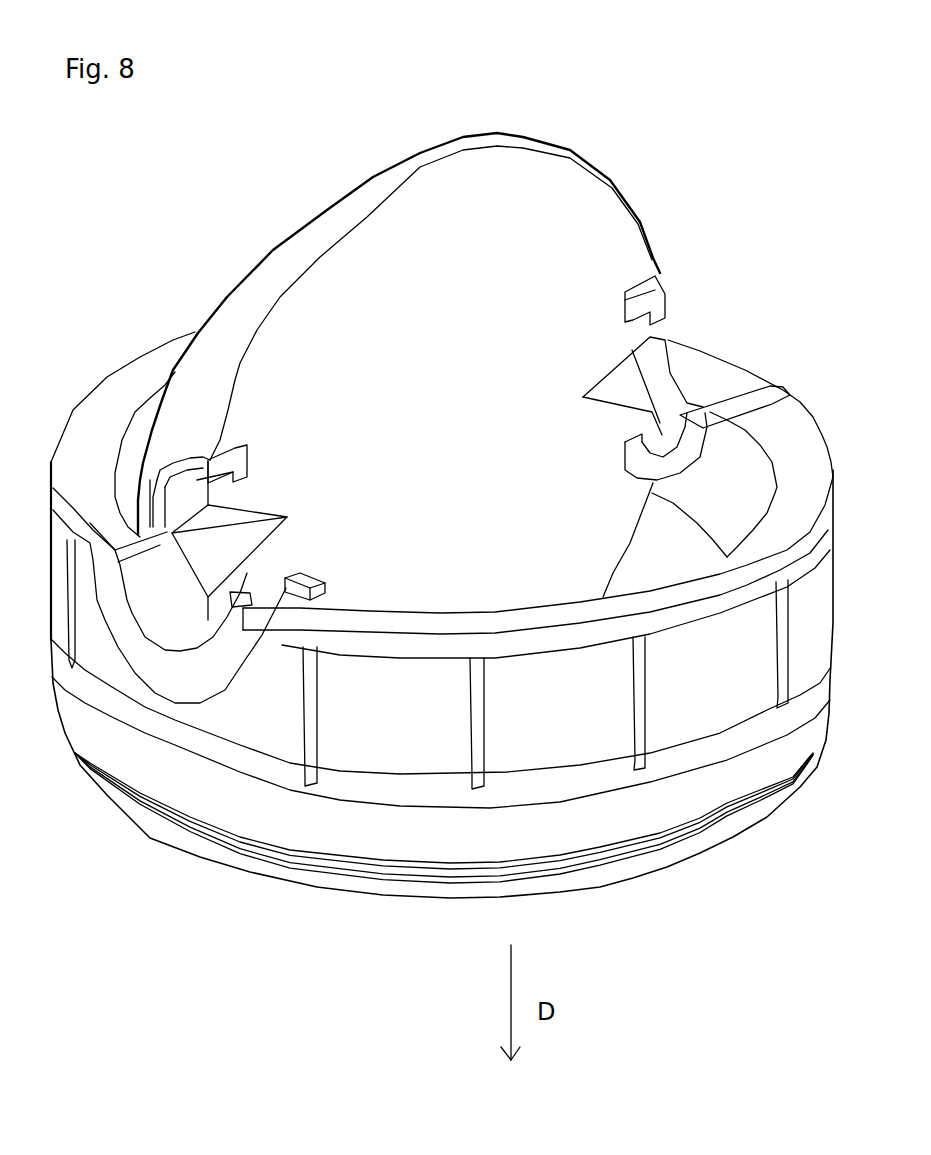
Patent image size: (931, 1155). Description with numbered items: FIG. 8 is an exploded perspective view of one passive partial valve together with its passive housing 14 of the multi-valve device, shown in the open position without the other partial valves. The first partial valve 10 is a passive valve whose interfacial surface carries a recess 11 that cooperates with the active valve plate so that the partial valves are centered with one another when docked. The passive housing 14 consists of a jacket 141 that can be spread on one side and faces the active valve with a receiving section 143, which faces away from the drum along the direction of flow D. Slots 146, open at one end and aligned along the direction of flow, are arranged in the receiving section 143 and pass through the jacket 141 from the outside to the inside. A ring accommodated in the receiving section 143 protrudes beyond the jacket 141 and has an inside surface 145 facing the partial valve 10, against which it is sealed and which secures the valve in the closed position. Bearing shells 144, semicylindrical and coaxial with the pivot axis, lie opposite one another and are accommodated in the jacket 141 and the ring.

The first partial valve 10 is at (353, 313).
The recess 11 is at (224, 553).
The passive housing 14 is at (442, 449).
The jacket 141 is at (715, 665).
The receiving section 143 is at (810, 585).
The bearing shells 144 is at (292, 588).
The inside surface 145 is at (747, 470).
The slots 146 is at (72, 580).